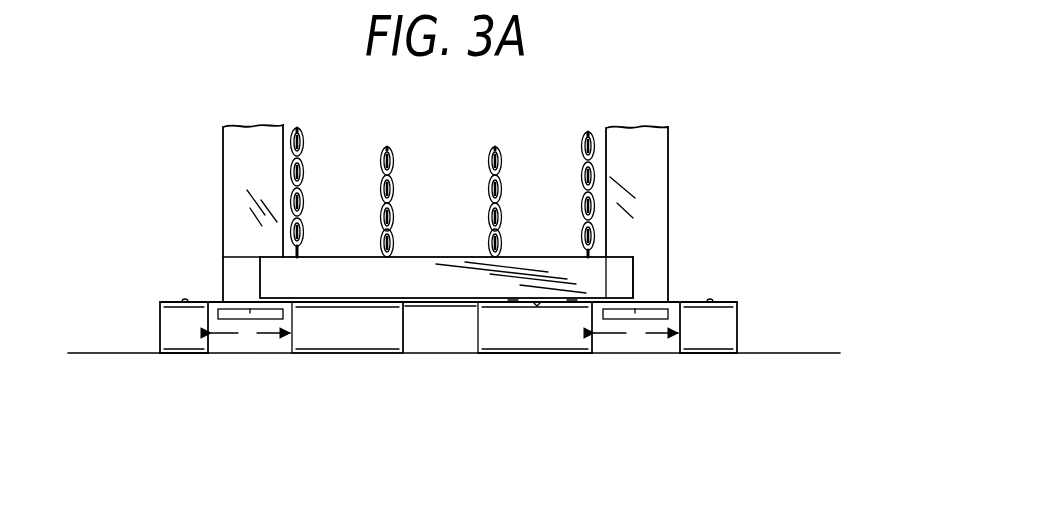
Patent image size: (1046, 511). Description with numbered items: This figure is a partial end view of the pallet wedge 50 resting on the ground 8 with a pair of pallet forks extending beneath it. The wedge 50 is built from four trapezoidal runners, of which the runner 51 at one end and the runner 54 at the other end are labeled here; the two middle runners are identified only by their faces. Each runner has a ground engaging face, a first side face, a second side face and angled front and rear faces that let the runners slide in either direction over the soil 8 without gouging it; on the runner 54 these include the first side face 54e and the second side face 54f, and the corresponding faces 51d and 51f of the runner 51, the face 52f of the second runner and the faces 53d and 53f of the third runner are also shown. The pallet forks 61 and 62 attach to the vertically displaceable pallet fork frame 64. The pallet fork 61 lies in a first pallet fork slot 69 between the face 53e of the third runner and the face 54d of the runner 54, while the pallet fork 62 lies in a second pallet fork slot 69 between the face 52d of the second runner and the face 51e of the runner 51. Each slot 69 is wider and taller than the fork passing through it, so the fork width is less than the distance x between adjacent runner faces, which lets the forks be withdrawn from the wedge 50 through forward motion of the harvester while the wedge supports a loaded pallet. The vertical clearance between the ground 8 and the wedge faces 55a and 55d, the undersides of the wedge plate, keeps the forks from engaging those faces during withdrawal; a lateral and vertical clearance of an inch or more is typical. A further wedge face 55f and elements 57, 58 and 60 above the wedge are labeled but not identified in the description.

The ground 8 is at (112, 353).
The pallet wedge 50 is at (532, 356).
The runner 51 is at (180, 356).
The outer side surface of first end block 51d is at (167, 322).
The face of runner 51e is at (209, 340).
The bottom surface of first end block 51f is at (172, 353).
The face of runner 52d is at (292, 342).
The side surface of second block 52f is at (403, 345).
The side surface of center block 53d is at (478, 337).
The face of runner 53e is at (595, 340).
The bottom surface of center block 53f is at (490, 357).
The runner 54 is at (712, 357).
The face of runner 54d is at (677, 342).
The first side face 54e is at (737, 321).
The second side face 54f is at (716, 355).
The wedge plate underside 55a is at (655, 308).
The wedge face 55d is at (232, 308).
The side surface of load plate 55f is at (607, 273).
The lifting chain 57 is at (580, 146).
The load plate 58 is at (503, 177).
The lifting chain 60 is at (301, 172).
The pallet fork 61 is at (640, 310).
The pallet fork 62 is at (248, 312).
The vertically displaceable pallet fork frame 64 is at (237, 155).
The pallet fork slot 69 is at (262, 340).